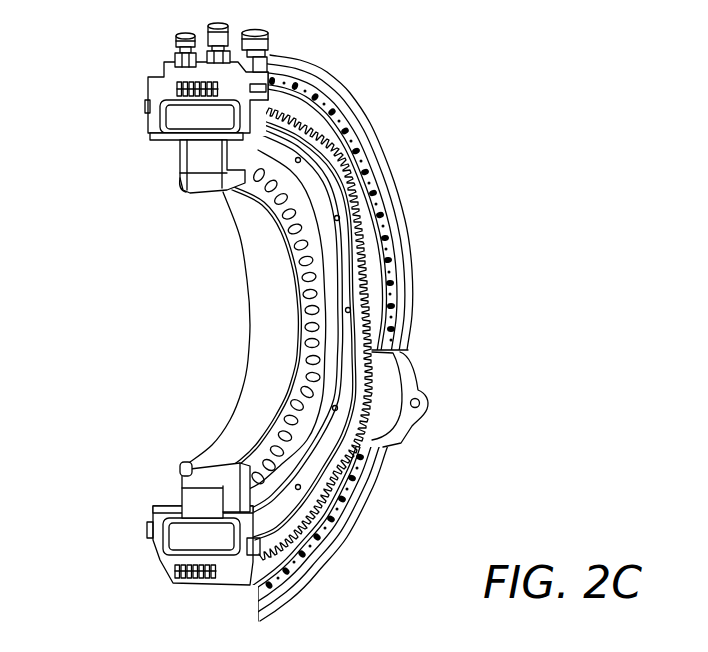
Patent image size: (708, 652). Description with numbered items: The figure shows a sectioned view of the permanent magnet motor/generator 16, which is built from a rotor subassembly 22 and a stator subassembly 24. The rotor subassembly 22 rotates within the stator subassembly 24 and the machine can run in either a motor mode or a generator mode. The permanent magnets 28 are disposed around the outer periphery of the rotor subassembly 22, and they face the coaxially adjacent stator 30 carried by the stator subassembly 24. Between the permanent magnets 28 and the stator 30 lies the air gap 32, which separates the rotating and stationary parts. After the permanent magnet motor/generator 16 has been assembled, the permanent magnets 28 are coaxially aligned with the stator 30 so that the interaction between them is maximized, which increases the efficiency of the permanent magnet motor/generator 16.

The permanent magnet motor/generator 16 is at (590, 145).
The rotor subassembly 22 is at (252, 338).
The stator subassembly 24 is at (398, 173).
The permanent magnets 28 is at (197, 165).
The stator 30 is at (172, 107).
The air gap 32 is at (195, 138).